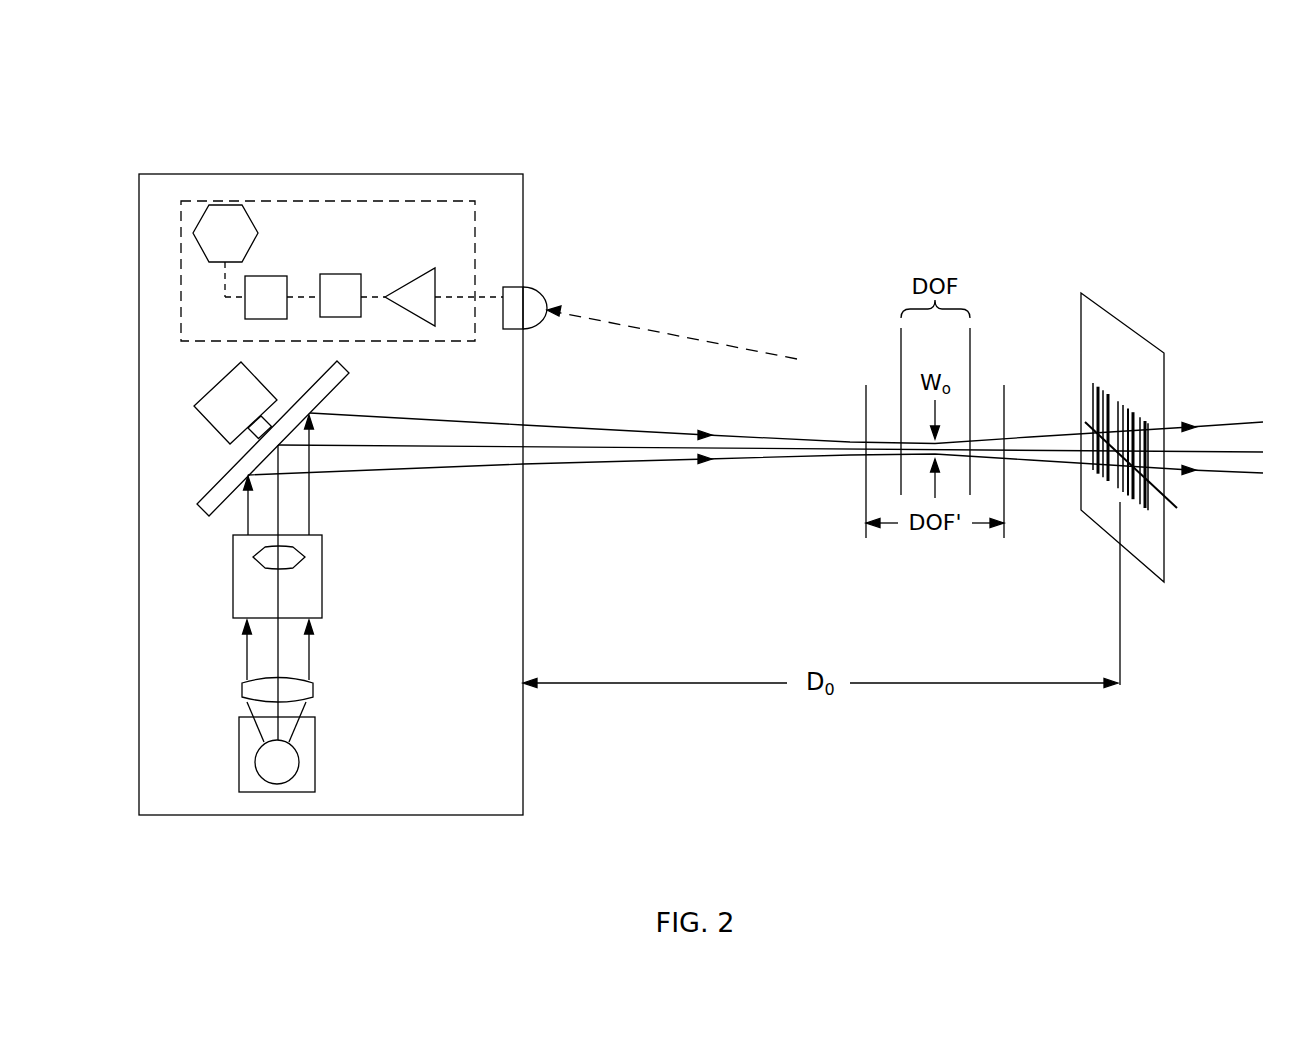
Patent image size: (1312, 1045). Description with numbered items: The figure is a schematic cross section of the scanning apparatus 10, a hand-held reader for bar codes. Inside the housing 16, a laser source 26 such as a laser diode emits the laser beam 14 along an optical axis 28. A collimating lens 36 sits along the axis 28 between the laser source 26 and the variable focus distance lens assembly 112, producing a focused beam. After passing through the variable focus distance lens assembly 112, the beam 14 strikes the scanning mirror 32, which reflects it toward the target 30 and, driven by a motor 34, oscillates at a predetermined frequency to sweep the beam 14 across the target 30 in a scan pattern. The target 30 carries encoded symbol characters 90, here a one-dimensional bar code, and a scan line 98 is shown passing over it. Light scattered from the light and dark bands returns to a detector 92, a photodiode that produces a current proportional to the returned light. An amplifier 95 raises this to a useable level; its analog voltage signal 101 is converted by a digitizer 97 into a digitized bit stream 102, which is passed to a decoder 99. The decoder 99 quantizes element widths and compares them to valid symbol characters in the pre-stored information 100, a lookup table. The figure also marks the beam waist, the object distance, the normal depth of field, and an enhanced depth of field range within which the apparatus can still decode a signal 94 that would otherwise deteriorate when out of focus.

The scanning apparatus 10 is at (167, 96).
The laser beam 14 is at (740, 458).
The housing 16 is at (139, 582).
The laser source 26 is at (316, 765).
The optical axis 28 is at (280, 664).
The target 30 is at (1127, 323).
The scanning mirror 32 is at (345, 366).
The motor 34 is at (235, 403).
The collimating lens 36 is at (314, 690).
The encoded symbol characters 90 is at (1124, 433).
The detector 92 is at (533, 287).
The signal 94 is at (458, 297).
The amplifier 95 is at (410, 297).
The digitizer 97 is at (340, 295).
The scan line 98 is at (1152, 474).
The decoder 99 is at (266, 297).
The pre-stored information 100 is at (225, 251).
The analog voltage signal 101 is at (373, 297).
The digitized bit stream 102 is at (305, 297).
The variable focus distance lens assembly 112 is at (322, 580).